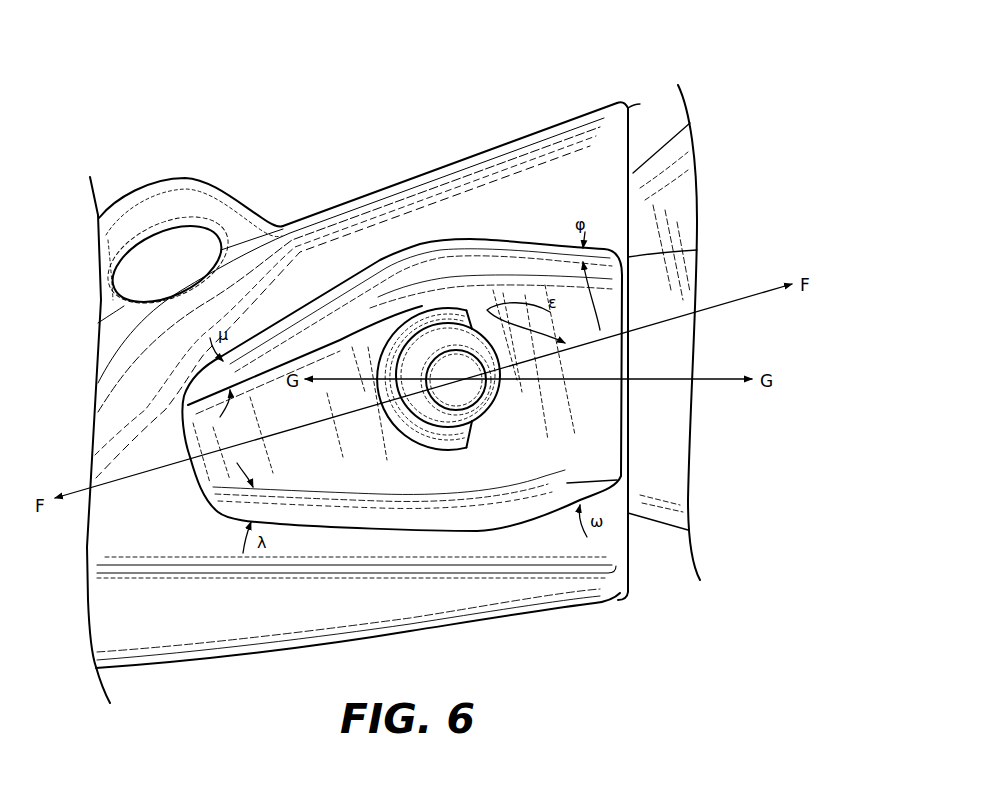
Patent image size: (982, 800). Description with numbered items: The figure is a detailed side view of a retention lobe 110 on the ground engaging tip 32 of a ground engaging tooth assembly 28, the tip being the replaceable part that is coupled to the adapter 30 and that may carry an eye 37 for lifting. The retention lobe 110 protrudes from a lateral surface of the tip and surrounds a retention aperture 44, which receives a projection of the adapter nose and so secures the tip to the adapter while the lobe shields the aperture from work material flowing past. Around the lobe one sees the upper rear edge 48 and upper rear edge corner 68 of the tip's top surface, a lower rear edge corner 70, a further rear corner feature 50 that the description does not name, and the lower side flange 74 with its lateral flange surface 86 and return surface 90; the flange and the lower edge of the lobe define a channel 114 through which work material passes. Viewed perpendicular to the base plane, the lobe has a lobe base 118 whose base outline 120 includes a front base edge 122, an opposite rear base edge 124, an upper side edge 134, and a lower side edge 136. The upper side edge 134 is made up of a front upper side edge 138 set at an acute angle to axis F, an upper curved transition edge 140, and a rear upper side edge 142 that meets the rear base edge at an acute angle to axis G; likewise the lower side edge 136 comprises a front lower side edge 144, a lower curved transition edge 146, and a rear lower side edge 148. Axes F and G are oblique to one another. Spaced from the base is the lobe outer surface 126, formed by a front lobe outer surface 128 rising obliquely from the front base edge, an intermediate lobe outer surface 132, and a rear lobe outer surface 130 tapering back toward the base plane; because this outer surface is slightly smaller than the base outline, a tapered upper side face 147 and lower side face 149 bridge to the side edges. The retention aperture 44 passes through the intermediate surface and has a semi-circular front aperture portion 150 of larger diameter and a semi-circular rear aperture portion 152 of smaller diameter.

The ground engaging tooth assembly 28 is at (585, 72).
The adapter 30 is at (700, 193).
The ground engaging tip 32 is at (218, 173).
The eye 37 is at (147, 187).
The retention aperture 44 is at (493, 413).
The upper rear edge 48 is at (624, 100).
The lower rear corner 50 is at (622, 597).
The upper rear edge corner 68 is at (633, 108).
The lower rear edge corner 70 is at (627, 580).
The lower side flange 74 is at (168, 673).
The lateral flange surface 86 is at (227, 633).
The return surface 90 is at (148, 562).
The retention lobe 110 is at (605, 439).
The channel 114 is at (382, 535).
The lobe base 118 is at (497, 231).
The base outline 120 is at (390, 255).
The front base edge 122 is at (180, 424).
The rear base edge 124 is at (697, 251).
The lobe outer surface 126 is at (357, 309).
The front lobe outer surface 128 is at (311, 481).
The rear lobe outer surface 130 is at (599, 372).
The intermediate lobe outer surface 132 is at (484, 481).
The upper side edge 134 is at (297, 303).
The lower side edge 136 is at (417, 537).
The front upper side edge 138 is at (258, 334).
The upper curved transition edge 140 is at (420, 240).
The rear upper side edge 142 is at (470, 237).
The front lower side edge 144 is at (310, 522).
The lower curved transition edge 146 is at (477, 530).
The upper side face 147 is at (447, 257).
The rear lower side edge 148 is at (575, 513).
The lower side face 149 is at (508, 500).
The front aperture portion 150 is at (392, 410).
The rear aperture portion 152 is at (496, 396).